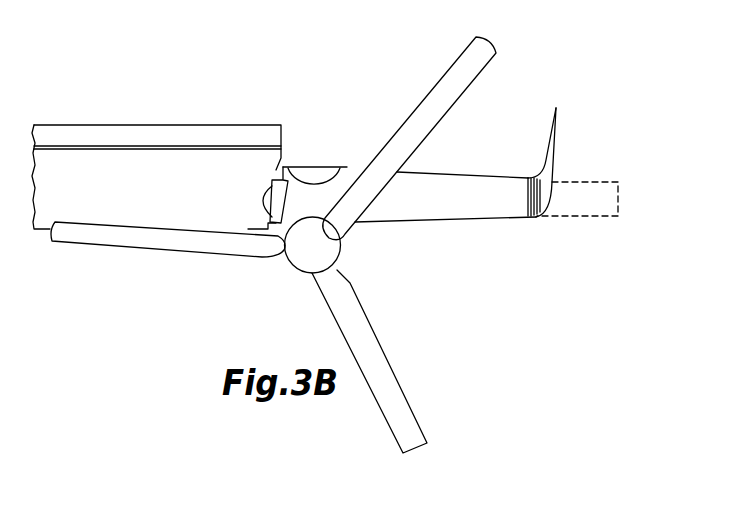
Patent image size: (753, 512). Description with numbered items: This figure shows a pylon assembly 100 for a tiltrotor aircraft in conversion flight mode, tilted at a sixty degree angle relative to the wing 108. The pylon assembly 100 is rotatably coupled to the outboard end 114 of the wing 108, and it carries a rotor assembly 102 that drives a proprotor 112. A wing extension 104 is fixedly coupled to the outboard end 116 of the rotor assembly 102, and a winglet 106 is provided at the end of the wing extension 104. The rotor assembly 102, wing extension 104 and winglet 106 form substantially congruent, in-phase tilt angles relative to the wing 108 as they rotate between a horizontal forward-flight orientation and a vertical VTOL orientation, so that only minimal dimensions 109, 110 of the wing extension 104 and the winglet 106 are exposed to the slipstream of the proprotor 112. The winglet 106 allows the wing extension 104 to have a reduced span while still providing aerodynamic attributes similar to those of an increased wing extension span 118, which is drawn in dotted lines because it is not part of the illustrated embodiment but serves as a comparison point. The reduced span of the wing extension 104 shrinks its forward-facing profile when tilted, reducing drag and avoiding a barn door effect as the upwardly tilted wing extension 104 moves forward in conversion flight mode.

The pylon assembly 100 is at (535, 78).
The rotor assembly 102 is at (317, 190).
The wing extension 104 is at (490, 208).
The winglet 106 is at (552, 136).
The wing 108 is at (133, 158).
The minimal dimension 109 is at (397, 222).
The minimal dimension 110 is at (555, 165).
The proprotor 112 is at (302, 256).
The outboard end 114 is at (272, 176).
The outboard end 116 is at (343, 182).
The increased wing extension span 118 is at (588, 218).